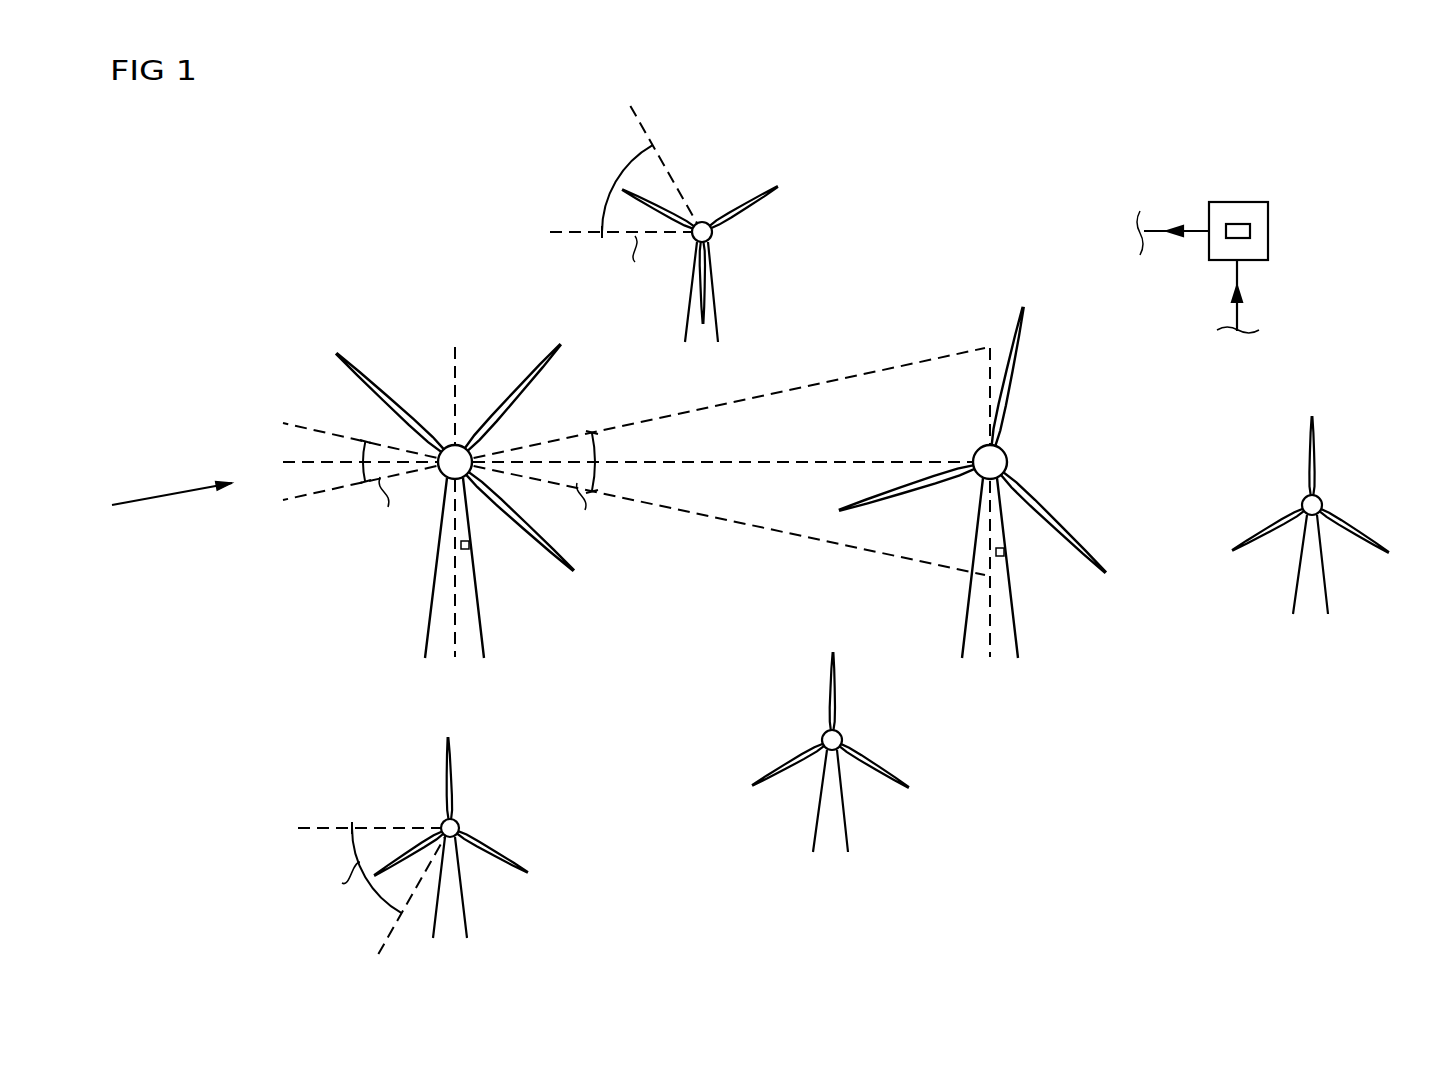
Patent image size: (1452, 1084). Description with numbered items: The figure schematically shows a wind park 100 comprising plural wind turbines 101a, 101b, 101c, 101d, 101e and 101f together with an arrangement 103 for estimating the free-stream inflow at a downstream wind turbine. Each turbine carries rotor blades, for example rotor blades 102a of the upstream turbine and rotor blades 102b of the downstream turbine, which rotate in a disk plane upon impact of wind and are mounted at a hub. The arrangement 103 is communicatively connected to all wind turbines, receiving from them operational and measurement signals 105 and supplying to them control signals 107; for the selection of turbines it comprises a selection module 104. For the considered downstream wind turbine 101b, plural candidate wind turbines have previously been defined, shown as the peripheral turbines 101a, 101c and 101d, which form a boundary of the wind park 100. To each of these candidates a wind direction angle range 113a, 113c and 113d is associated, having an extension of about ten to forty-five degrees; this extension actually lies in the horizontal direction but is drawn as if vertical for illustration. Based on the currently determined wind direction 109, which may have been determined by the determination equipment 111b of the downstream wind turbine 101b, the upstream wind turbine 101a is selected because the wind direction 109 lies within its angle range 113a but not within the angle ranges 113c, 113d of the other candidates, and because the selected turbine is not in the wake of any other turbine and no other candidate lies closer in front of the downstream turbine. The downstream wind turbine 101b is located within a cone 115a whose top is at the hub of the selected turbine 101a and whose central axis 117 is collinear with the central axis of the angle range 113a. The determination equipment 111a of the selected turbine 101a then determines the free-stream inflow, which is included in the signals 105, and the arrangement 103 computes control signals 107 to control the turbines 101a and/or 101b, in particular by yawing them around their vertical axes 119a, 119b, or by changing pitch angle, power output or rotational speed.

The wind park 100 is at (398, 132).
The upstream wind turbine 101a is at (501, 470).
The downstream wind turbine 101b is at (993, 476).
The candidate wind turbine 101c is at (745, 176).
The candidate wind turbine 101d is at (495, 792).
The wind turbine 101e is at (810, 732).
The wind turbine 101f is at (1339, 483).
The rotor blades 102a is at (530, 368).
The rotor blades 102b is at (1015, 330).
The arrangement 103 is at (1242, 246).
The selection module 104 is at (1238, 224).
The operational and measurement signals 105 is at (1243, 284).
The control signals 107 is at (1162, 229).
The wind direction 109 is at (172, 469).
The determination equipment 111a is at (472, 551).
The determination equipment 111b is at (1008, 556).
The wind direction angle range 113a is at (303, 430).
The wind direction angle range 113c is at (637, 118).
The wind direction angle range 113d is at (320, 828).
The cone 115a is at (762, 395).
The central axis 117 is at (840, 460).
The vertical axis 119a is at (453, 588).
The vertical axis 119b is at (988, 622).